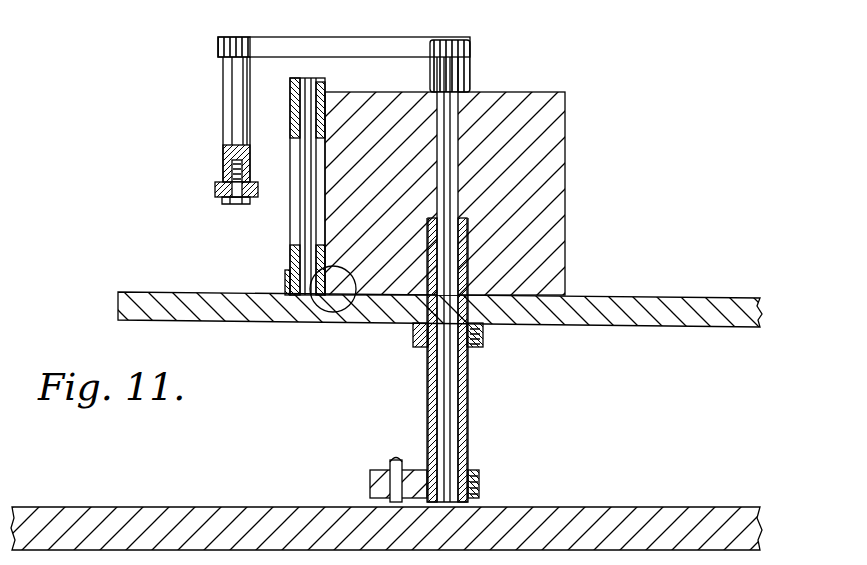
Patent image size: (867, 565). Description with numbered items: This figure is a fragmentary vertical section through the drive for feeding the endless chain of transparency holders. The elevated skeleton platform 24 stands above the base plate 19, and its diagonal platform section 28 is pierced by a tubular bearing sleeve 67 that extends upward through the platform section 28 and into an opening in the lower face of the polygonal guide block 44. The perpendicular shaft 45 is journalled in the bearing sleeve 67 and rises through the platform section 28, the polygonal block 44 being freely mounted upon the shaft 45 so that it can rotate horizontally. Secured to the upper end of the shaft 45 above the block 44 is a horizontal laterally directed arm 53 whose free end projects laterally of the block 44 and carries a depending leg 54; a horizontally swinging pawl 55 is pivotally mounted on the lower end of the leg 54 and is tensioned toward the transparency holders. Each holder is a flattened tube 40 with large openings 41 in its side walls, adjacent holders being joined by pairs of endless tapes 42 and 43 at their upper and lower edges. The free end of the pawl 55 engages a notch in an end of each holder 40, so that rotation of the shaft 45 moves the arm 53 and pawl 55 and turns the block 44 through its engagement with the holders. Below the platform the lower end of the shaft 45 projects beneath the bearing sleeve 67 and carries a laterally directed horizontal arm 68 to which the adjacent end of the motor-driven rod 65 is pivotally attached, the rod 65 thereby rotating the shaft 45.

The base plate 19 is at (296, 507).
The elevated skeleton platform 24 is at (675, 288).
The platform section 28 is at (592, 297).
The flattened tube 40 is at (298, 118).
The opening 41 is at (302, 216).
The endless tape 42 is at (292, 86).
The endless tape 43 is at (345, 98).
The polygonal guide block 44 is at (545, 196).
The perpendicular shaft 45 is at (450, 143).
The arm 53 is at (388, 44).
The depending leg 54 is at (233, 118).
The pawl 55 is at (218, 188).
The rod 65 is at (393, 458).
The bearing sleeve 67 is at (470, 403).
The arm 68 is at (410, 470).